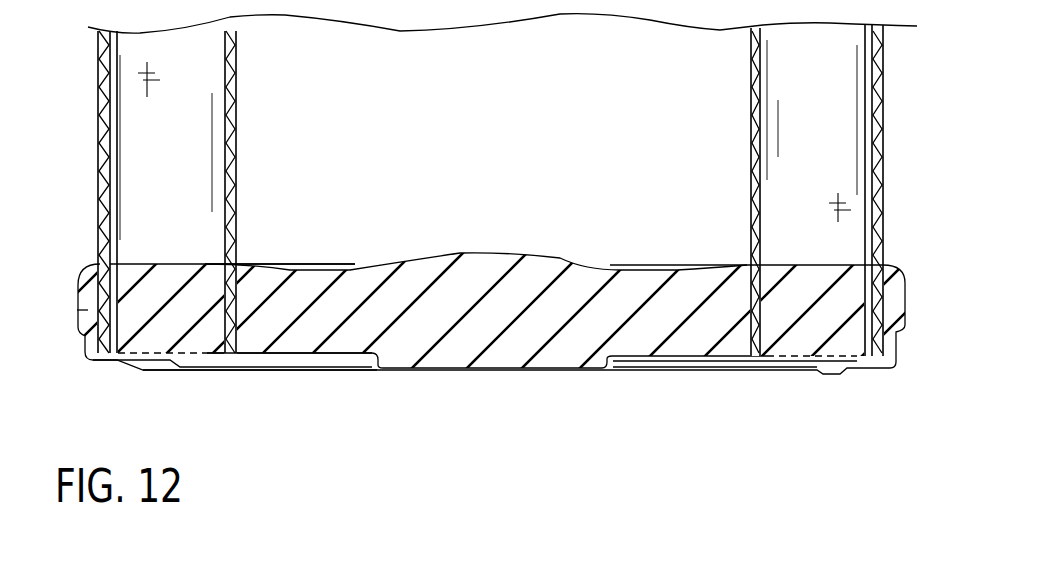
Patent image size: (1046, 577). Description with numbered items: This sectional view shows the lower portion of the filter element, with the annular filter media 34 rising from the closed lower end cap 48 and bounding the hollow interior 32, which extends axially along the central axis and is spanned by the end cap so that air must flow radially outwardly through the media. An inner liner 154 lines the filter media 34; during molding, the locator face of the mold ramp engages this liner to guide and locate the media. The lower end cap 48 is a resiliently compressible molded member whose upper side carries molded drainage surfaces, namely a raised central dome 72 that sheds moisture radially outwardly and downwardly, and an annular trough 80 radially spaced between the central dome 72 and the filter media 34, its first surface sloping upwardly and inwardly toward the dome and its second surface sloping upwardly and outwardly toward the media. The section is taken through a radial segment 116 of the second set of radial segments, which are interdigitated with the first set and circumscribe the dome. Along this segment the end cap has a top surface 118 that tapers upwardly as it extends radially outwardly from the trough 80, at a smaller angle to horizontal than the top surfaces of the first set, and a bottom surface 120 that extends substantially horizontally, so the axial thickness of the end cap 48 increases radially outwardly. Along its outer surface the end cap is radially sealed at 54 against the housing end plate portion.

The hollow interior 32 is at (492, 111).
The annular filter media 34 is at (136, 152).
The inner liner 154 is at (233, 148).
The top surface 118 is at (277, 262).
The annular trough 80 is at (290, 265).
The central dome 72 is at (486, 257).
The lower end cap 48 is at (586, 280).
The radial seal 54 is at (88, 310).
The bottom surface 120 is at (250, 362).
The radial segment 116 is at (282, 308).